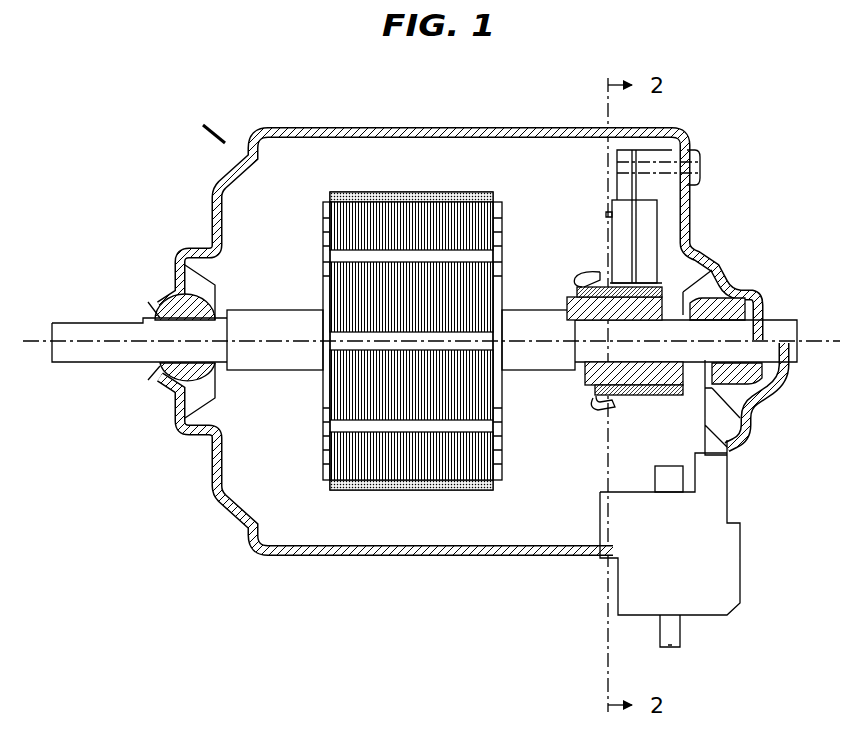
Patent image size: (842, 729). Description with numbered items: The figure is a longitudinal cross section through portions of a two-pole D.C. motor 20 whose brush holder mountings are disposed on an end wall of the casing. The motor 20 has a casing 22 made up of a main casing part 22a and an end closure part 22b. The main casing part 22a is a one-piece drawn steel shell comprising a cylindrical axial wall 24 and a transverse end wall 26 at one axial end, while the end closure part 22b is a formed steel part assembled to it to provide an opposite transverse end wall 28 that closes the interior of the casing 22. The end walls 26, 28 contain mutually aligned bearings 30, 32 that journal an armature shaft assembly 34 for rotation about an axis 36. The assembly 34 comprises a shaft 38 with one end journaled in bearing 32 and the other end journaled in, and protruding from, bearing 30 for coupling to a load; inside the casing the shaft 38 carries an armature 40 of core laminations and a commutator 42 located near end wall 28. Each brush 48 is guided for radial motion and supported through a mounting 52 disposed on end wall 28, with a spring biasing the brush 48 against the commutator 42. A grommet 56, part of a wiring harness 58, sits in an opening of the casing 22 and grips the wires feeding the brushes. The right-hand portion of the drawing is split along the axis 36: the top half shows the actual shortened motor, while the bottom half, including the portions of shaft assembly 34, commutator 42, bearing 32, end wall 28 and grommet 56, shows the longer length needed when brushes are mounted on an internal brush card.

The electric D.C. motor 20 is at (225, 143).
The casing 22 is at (481, 335).
The main casing part 22a is at (472, 335).
The end closure part 22b is at (698, 250).
The cylindrical axial wall 24 is at (469, 128).
The transverse end wall 26 is at (209, 468).
The transverse end wall 28 is at (747, 408).
The bearing 30 is at (157, 367).
The bearing 32 is at (758, 352).
The armature shaft assembly 34 is at (86, 316).
The axis 36 is at (32, 344).
The shaft 38 is at (278, 355).
The armature 40 is at (380, 510).
The commutator 42 is at (590, 272).
The brush 48 is at (648, 220).
The mounting 52 is at (658, 190).
The grommet 56 is at (718, 562).
The wiring harness 58 is at (700, 633).